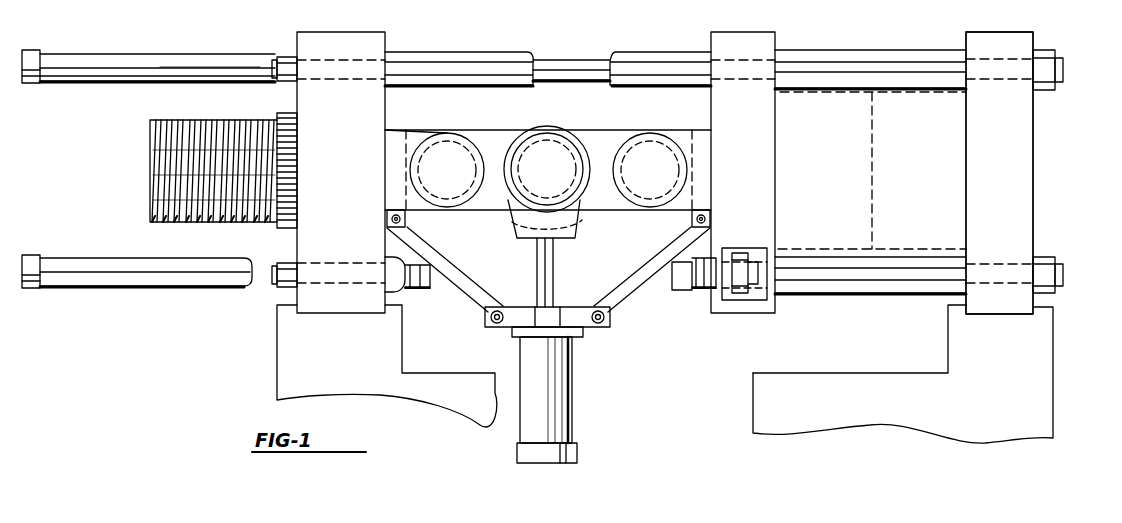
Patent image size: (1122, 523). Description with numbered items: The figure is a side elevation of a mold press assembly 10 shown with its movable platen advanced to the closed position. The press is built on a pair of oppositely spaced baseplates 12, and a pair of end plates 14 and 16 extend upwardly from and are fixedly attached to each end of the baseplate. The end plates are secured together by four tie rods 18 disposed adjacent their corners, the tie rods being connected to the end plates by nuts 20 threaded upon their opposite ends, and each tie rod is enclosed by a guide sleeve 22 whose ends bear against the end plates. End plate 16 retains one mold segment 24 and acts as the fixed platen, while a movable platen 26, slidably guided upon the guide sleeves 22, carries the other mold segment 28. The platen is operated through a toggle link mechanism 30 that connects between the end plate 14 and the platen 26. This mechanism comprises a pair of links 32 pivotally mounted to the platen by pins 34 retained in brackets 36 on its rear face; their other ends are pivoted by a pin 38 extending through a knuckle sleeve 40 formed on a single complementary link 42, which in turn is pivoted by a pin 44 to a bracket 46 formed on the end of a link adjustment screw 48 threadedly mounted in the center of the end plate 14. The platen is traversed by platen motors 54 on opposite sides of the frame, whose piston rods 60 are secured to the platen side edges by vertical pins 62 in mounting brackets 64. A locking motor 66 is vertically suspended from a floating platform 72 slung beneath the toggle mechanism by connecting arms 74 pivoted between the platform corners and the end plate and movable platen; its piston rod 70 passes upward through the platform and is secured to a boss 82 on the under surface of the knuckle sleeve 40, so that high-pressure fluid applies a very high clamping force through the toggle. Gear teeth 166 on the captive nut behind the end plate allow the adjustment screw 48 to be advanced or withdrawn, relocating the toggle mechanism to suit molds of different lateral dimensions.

The press assembly 10 is at (1040, 181).
The baseplates 12 is at (285, 372).
The end plate 14 is at (303, 36).
The end plate 16 is at (1033, 146).
The tie rods 18 is at (565, 60).
The nuts 20 is at (285, 262).
The guide sleeves 22 is at (470, 55).
The mold segment 24 is at (930, 240).
The movable platen 26 is at (726, 42).
The mold segment 28 is at (828, 248).
The toggle link mechanism 30 is at (508, 218).
The links 32 is at (633, 103).
The pins 34 is at (648, 142).
The brackets 36 is at (700, 103).
The pin 38 is at (557, 148).
The knuckle sleeve 40 is at (565, 104).
The link 42 is at (487, 140).
The pin 44 is at (445, 140).
The bracket 46 is at (435, 107).
The link adjustment screw 48 is at (207, 118).
The platen motors 54 is at (210, 2).
The piston rods 60 is at (670, 0).
The vertical pins 62 is at (748, 256).
The mounting brackets 64 is at (745, 0).
The locking motor 66 is at (568, 416).
The piston rod 70 is at (553, 297).
The floating platform 72 is at (522, 333).
The connecting arms 74 is at (470, 314).
The boss 82 is at (564, 230).
The gear teeth 166 is at (283, 113).